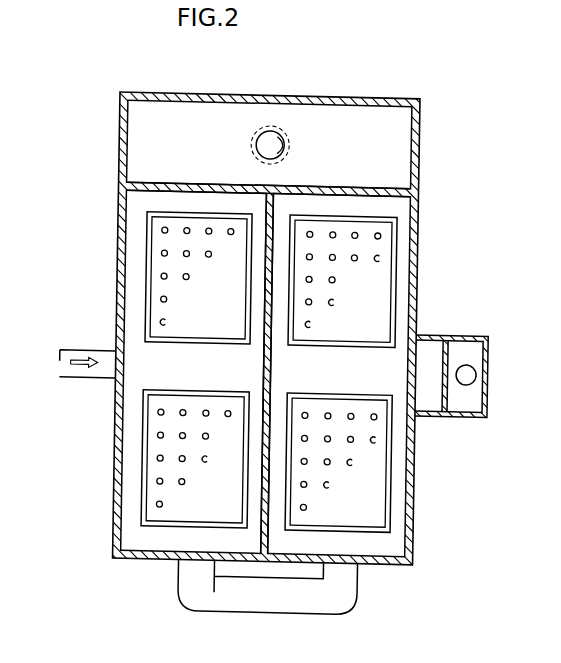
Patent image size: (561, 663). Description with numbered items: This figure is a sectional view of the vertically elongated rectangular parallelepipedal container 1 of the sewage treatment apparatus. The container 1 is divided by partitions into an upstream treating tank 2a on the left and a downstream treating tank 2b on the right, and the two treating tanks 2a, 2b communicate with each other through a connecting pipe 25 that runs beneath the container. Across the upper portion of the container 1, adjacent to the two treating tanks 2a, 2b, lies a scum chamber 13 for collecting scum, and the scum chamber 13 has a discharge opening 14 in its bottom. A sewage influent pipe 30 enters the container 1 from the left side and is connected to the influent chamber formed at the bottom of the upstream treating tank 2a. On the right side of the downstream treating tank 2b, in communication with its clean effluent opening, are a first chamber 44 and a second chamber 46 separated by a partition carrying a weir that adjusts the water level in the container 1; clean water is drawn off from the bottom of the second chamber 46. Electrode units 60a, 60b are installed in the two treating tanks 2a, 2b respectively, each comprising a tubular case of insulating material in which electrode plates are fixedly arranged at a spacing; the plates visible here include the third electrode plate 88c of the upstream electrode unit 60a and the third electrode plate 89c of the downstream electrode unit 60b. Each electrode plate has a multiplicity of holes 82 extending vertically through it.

The container 1 is at (0, 348).
The upstream treating tank 2a is at (188, 403).
The downstream treating tank 2b is at (262, 450).
The scum chamber 13 is at (270, 112).
The discharge opening 14 is at (295, 142).
The connecting pipe 25 is at (267, 605).
The sewage influent pipe 30 is at (87, 345).
The first chamber 44 is at (452, 356).
The second chamber 46 is at (474, 348).
The electrode unit 60a is at (197, 334).
The electrode unit 60b is at (341, 340).
The holes 82 is at (268, 372).
The third electrode plate 88c is at (197, 338).
The third electrode plate 89c is at (341, 342).